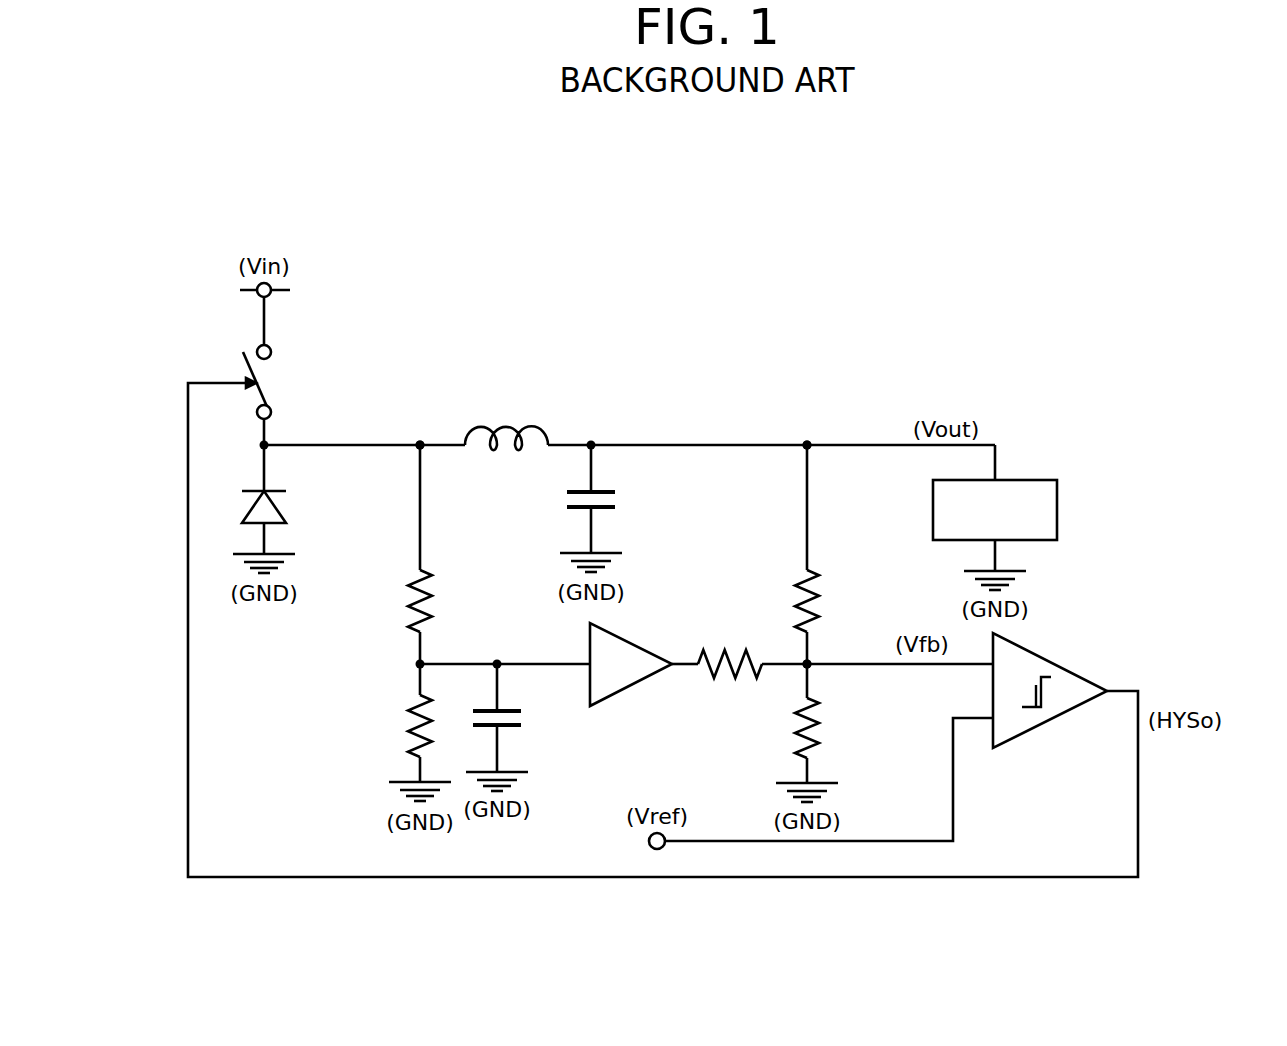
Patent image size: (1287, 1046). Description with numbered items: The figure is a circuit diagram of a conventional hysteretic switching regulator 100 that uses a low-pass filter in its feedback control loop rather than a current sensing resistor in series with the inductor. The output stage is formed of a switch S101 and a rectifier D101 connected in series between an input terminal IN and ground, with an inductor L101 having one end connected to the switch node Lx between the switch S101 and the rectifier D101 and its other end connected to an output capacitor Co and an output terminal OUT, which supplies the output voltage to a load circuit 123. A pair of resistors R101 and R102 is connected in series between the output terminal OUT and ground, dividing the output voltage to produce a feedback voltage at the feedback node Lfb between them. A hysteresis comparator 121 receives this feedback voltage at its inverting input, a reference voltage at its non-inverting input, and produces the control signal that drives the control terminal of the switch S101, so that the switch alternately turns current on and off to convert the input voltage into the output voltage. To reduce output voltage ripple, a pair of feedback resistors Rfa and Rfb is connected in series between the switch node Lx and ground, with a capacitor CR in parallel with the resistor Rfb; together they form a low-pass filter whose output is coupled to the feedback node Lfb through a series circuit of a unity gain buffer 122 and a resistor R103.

The hysteretic switching regulator 100 is at (948, 302).
The input terminal IN is at (270, 296).
The switch S101 is at (288, 385).
The rectifier D101 is at (300, 507).
The switch node Lx is at (375, 441).
The inductor L101 is at (506, 419).
The output capacitor Co is at (610, 501).
The output terminal OUT is at (811, 441).
The load circuit 123 is at (1022, 480).
The feedback resistor Rfa is at (397, 601).
The feedback resistor Rfb is at (397, 726).
The capacitor CR is at (517, 719).
The unity gain buffer 122 is at (625, 640).
The resistor R103 is at (730, 649).
The resistor R101 is at (842, 601).
The resistor R102 is at (842, 728).
The feedback node Lfb is at (812, 660).
The hysteresis comparator 121 is at (1048, 656).